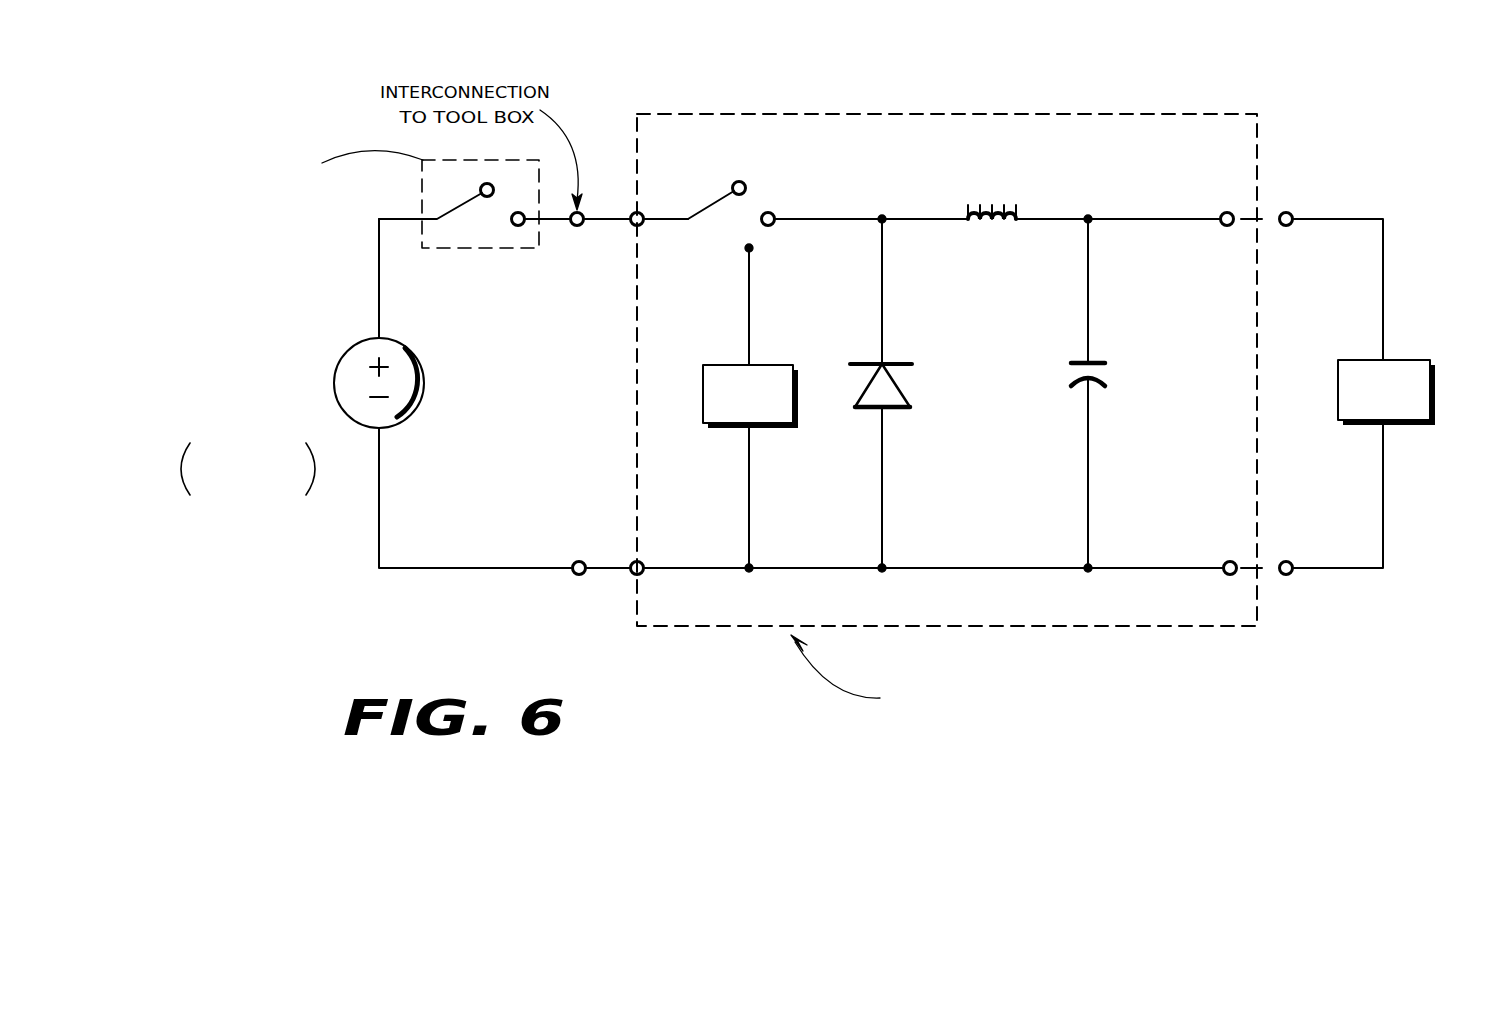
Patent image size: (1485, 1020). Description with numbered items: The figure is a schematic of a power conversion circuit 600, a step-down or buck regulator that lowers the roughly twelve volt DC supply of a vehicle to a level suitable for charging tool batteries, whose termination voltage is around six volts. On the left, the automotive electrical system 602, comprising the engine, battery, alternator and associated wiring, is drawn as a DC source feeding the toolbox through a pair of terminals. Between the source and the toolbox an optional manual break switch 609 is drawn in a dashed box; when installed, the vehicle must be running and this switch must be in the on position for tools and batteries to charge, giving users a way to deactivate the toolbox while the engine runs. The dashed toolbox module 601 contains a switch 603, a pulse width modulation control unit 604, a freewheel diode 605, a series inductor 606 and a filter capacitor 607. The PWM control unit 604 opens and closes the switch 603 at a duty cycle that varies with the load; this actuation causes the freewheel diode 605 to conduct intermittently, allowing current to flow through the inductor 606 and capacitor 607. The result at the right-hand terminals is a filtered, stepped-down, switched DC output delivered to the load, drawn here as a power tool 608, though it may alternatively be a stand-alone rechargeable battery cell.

The buck regulator circuit 600 is at (332, 629).
The toolbox module 601 is at (637, 114).
The automotive electrical system 602 is at (428, 400).
The switch 603 is at (708, 190).
The pulse width modulation (PWM) control unit 604 is at (789, 362).
The freewheel diode 605 is at (903, 387).
The series inductor 606 is at (990, 192).
The filter capacitor 607 is at (1107, 368).
The power tool 608 is at (1427, 360).
The optional manual break switch 609 is at (422, 248).